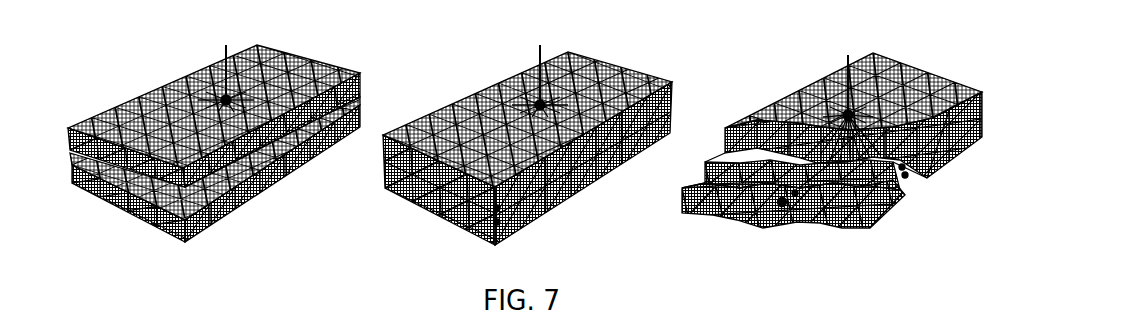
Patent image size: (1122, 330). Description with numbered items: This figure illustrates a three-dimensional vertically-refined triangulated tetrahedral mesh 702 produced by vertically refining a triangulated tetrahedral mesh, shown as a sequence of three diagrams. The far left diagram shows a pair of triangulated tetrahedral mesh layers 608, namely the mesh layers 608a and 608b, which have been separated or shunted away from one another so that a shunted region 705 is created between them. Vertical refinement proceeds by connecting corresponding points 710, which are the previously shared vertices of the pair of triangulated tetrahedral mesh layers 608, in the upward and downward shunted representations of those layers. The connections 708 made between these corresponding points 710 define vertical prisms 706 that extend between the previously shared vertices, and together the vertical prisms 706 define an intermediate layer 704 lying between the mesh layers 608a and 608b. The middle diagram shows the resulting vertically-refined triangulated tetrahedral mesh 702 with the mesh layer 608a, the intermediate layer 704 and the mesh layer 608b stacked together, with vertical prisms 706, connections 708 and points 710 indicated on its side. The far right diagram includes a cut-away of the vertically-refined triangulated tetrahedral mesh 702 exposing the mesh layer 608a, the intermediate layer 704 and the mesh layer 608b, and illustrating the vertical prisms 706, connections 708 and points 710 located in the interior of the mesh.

The vertically-refined triangulated tetrahedral mesh 702 is at (617, 51).
The triangulated tetrahedral mesh layers 608 is at (569, 165).
The triangulated tetrahedral mesh layer 608a is at (366, 73).
The triangulated tetrahedral mesh layer 608b is at (364, 109).
The intermediate layer 704 is at (677, 100).
The shunted region 705 is at (364, 92).
The vertical prisms 706 is at (480, 222).
The connections 708 is at (500, 211).
The corresponding points 710 is at (500, 210).